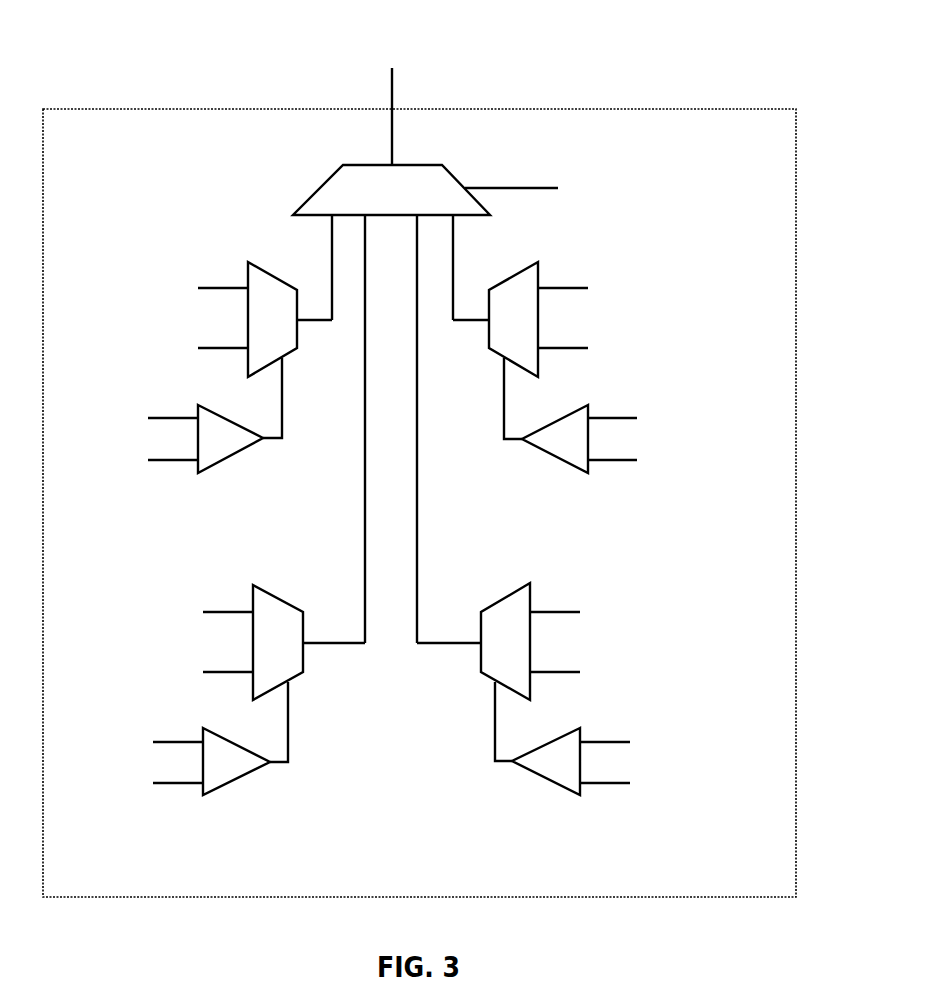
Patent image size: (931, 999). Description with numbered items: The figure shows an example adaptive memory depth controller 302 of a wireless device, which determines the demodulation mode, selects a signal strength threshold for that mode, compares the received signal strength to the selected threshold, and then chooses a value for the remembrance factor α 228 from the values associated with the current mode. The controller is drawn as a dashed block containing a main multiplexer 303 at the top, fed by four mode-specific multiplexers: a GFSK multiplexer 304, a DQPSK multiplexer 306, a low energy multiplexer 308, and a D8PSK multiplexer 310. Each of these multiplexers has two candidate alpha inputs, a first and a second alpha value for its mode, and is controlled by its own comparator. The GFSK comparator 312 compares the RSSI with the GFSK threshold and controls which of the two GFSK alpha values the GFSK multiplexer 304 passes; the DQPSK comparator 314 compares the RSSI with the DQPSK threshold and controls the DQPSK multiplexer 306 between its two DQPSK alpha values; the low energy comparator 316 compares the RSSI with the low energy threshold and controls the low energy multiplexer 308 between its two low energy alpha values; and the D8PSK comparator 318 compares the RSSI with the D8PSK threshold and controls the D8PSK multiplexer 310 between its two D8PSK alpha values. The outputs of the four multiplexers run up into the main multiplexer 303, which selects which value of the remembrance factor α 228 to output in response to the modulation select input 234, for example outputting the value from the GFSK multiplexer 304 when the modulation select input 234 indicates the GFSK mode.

The remembrance factor α 228 is at (392, 42).
The modulation select input 234 is at (639, 160).
The adaptive memory depth controller 302 is at (714, 109).
The main multiplexer 303 is at (426, 165).
The GFSK multiplexer 304 is at (290, 354).
The DQPSK multiplexer 306 is at (263, 586).
The low energy multiplexer 308 is at (496, 355).
The D8PSK multiplexer 310 is at (506, 592).
The GFSK comparator 312 is at (226, 462).
The DQPSK comparator 314 is at (234, 783).
The low energy comparator 316 is at (557, 461).
The D8PSK comparator 318 is at (550, 782).